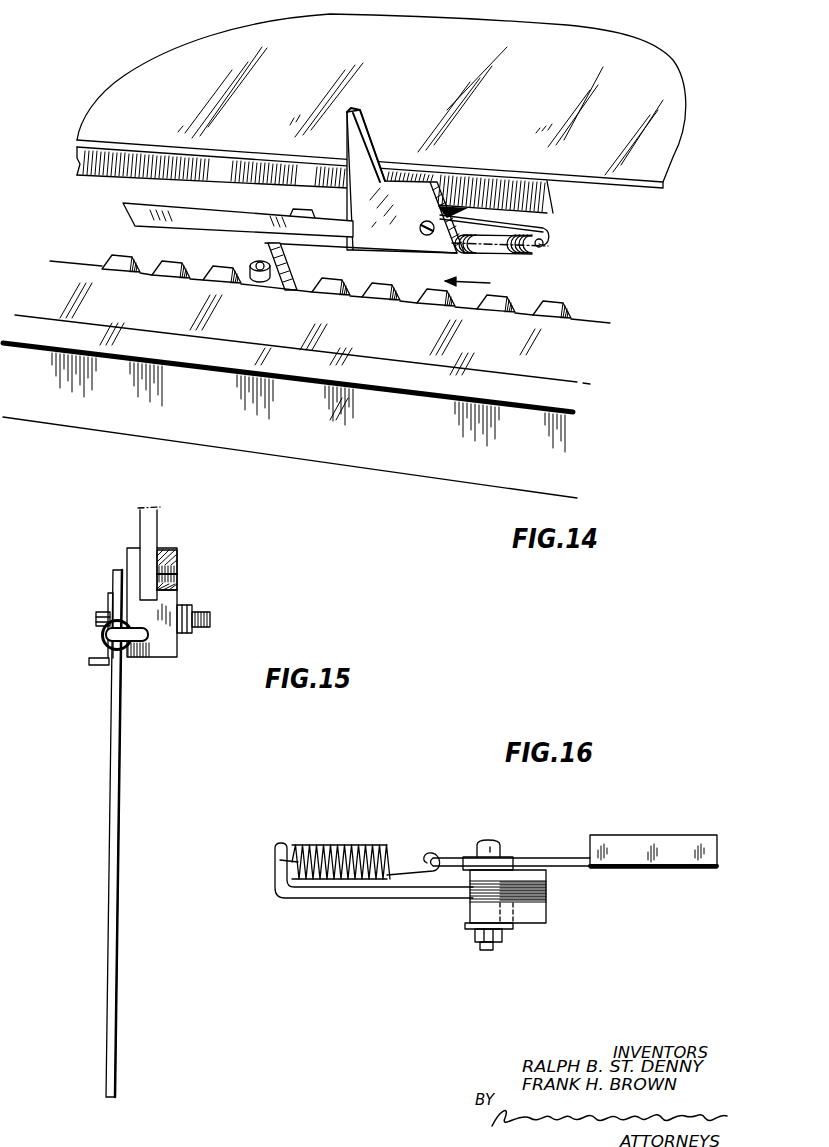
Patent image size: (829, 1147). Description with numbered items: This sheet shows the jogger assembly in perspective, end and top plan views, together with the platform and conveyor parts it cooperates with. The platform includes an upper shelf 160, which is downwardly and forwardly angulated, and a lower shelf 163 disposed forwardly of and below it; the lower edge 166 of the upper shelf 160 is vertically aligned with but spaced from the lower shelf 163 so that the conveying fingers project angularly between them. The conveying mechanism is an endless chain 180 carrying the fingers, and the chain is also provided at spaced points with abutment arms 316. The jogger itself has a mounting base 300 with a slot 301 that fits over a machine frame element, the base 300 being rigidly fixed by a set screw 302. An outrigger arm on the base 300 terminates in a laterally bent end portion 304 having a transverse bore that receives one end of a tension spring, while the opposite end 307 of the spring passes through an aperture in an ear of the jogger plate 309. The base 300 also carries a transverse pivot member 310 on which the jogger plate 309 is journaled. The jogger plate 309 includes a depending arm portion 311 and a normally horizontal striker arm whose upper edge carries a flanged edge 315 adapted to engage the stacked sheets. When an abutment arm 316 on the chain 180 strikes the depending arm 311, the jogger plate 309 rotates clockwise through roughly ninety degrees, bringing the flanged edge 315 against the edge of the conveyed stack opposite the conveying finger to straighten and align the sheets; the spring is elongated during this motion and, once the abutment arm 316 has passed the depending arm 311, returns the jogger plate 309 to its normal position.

In FIG. 14, the upper shelf 160 is at (528, 101).
In FIG. 14, the lower edge of the upper shelf 166 is at (612, 186).
In FIG. 14, the lower shelf 163 is at (515, 350).
In FIG. 14, the endless chain 180 is at (385, 288).
In FIG. 15, the mounting base 300 is at (166, 656).
In FIG. 16, the mounting base 300 is at (470, 912).
In FIG. 15, the slot 301 is at (152, 553).
In FIG. 16, the slot 301 is at (546, 894).
In FIG. 15, the set screw 302 is at (175, 570).
In FIG. 16, the set screw 302 is at (514, 913).
In FIG. 14, the laterally bent end portion 304 is at (549, 238).
In FIG. 15, the laterally bent end portion 304 is at (148, 657).
In FIG. 16, the laterally bent end portion 304 is at (275, 883).
In FIG. 14, the opposite end of the tension spring 307 is at (530, 254).
In FIG. 15, the opposite end of the tension spring 307 is at (102, 640).
In FIG. 16, the opposite end of the tension spring 307 is at (382, 846).
In FIG. 14, the jogger plate 309 is at (360, 197).
In FIG. 16, the jogger plate 309 is at (661, 870).
In FIG. 15, the transverse pivot member 310 is at (210, 620).
In FIG. 16, the transverse pivot member 310 is at (483, 948).
In FIG. 14, the depending arm portion 311 is at (187, 218).
In FIG. 15, the depending arm portion 311 is at (118, 840).
In FIG. 14, the flanged edge 315 is at (358, 140).
In FIG. 15, the flanged edge 315 is at (95, 666).
In FIG. 16, the flanged edge 315 is at (634, 847).
In FIG. 14, the abutment arm 316 is at (272, 245).